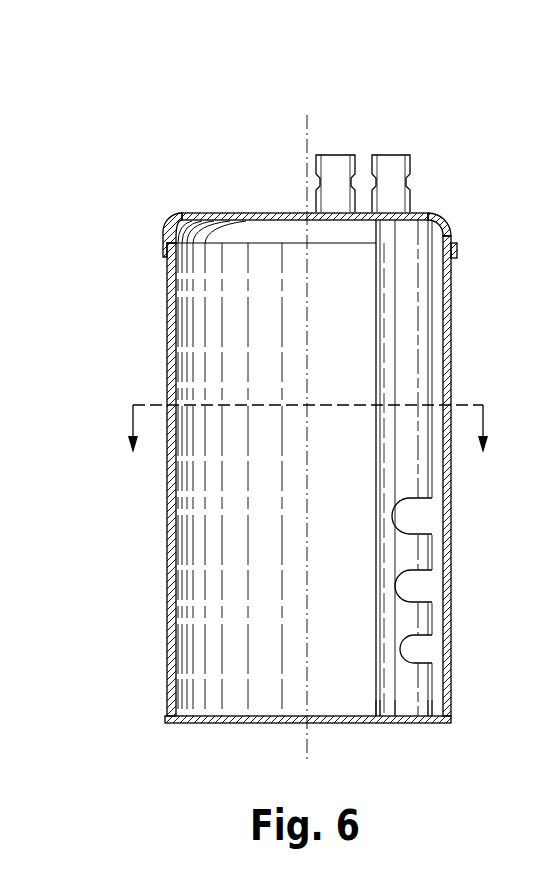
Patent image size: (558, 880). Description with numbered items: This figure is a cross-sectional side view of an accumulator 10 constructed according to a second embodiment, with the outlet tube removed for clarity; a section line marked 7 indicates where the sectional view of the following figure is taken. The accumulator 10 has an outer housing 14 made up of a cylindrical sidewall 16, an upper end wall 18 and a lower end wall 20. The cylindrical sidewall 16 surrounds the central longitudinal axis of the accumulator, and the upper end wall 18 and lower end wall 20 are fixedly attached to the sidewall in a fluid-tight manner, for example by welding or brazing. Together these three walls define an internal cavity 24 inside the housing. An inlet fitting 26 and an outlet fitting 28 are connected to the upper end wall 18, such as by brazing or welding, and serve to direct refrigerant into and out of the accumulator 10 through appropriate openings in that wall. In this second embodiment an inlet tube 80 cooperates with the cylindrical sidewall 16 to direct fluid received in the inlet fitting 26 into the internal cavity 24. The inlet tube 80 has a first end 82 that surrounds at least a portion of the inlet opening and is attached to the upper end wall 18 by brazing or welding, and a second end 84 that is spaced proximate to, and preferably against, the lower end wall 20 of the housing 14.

The accumulator 10 is at (307, 439).
The outer housing 14 is at (170, 214).
The cylindrical sidewall 16 is at (165, 566).
The upper end wall 18 is at (255, 212).
The lower end wall 20 is at (223, 724).
The internal cavity 24 is at (208, 650).
The inlet fitting 26 is at (398, 175).
The outlet fitting 28 is at (330, 168).
The inlet tube 80 is at (408, 372).
The first end 82 is at (408, 222).
The second end 84 is at (407, 718).
The section line 7- 7 is at (308, 445).